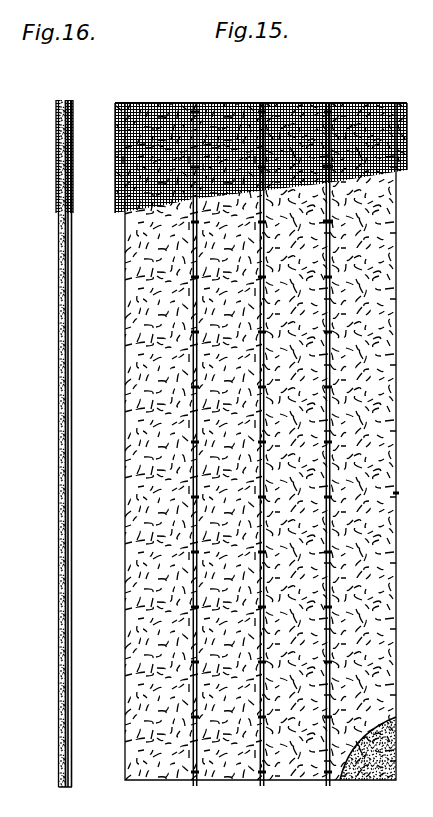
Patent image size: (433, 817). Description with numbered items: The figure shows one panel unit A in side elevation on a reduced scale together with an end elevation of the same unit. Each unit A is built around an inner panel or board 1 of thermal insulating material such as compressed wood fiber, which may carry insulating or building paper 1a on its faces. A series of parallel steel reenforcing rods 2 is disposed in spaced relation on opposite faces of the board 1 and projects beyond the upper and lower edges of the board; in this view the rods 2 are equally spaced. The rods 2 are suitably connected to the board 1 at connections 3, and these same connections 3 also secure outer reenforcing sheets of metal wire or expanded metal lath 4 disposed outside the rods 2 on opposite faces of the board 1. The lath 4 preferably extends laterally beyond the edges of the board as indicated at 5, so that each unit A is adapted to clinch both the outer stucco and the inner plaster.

In FIG. 16, the inner panel or board 1 is at (63, 101).
In FIG. 15, the inner panel or board 1 is at (382, 752).
In FIG. 15, the insulating or building paper 1a is at (378, 728).
In FIG. 16, the steel reenforcing rods 2 is at (71, 237).
In FIG. 15, the steel reenforcing rods 2 is at (330, 305).
In FIG. 16, the connections 3 is at (71, 173).
In FIG. 15, the connections 3 is at (332, 223).
In FIG. 16, the reenforcing sheets of metal wire or expanded metal lath 4 is at (57, 126).
In FIG. 15, the reenforcing sheets of metal wire or expanded metal lath 4 is at (368, 107).
In FIG. 15, the laterally extending portion of reenforcing sheets 5 is at (403, 107).
In FIG. 16, the panel unit A is at (66, 302).
In FIG. 15, the panel unit A is at (377, 208).